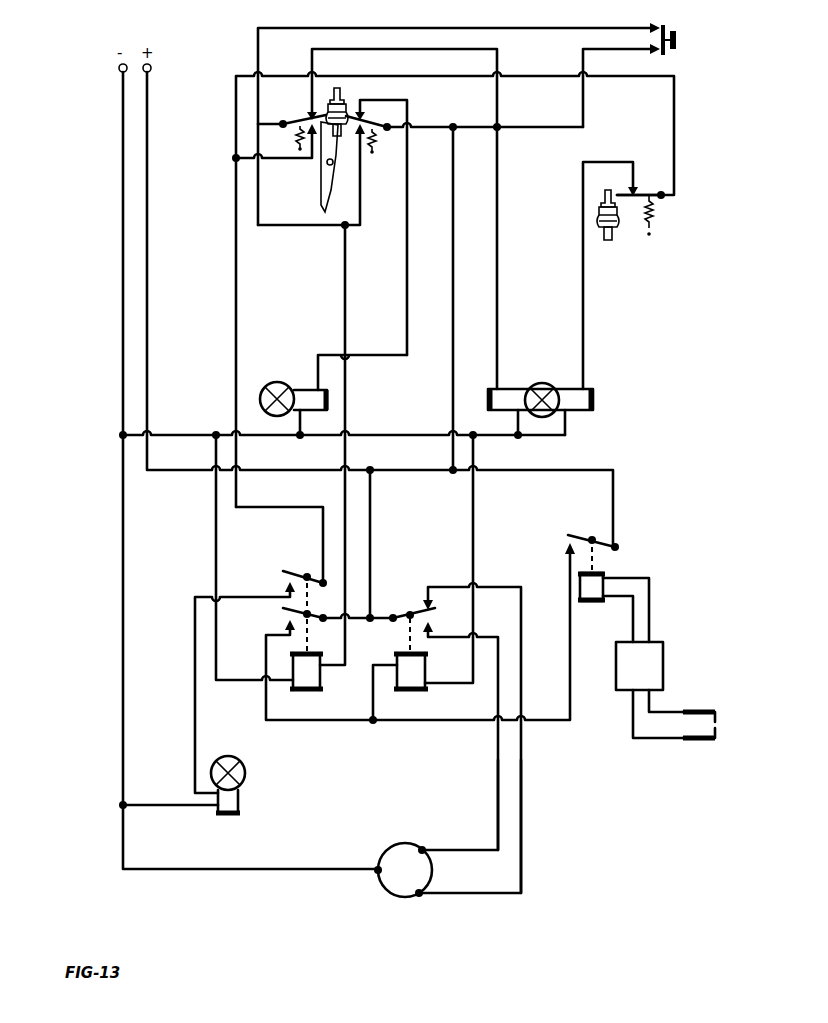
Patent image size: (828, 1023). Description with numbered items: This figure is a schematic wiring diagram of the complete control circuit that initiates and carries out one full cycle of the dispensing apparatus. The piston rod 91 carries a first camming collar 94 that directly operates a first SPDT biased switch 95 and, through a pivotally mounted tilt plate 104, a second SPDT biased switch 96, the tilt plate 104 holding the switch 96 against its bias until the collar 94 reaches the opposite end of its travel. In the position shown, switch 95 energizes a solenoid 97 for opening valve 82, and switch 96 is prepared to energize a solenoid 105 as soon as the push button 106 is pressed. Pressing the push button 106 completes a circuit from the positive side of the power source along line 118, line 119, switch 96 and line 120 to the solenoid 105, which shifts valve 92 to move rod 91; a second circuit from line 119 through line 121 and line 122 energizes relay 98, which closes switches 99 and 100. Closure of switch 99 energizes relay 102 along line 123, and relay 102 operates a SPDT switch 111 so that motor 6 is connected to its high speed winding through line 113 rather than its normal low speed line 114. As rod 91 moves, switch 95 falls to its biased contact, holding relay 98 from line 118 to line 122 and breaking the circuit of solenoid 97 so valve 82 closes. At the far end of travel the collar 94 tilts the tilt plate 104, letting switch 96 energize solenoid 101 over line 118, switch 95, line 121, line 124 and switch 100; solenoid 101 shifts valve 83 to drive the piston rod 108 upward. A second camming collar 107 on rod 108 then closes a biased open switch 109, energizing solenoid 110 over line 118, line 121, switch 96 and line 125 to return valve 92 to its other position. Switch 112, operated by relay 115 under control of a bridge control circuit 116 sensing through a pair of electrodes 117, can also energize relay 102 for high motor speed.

The motor 6 is at (400, 842).
The valve 82 is at (285, 378).
The valve 83 is at (236, 760).
The piston rod 91 is at (337, 96).
The valve 92 is at (547, 378).
The first camming collar 94 is at (346, 114).
The first SPDT biased switch 95 is at (385, 130).
The second SPDT biased switch 96 is at (296, 116).
The solenoid 97 is at (316, 412).
The relay 98 is at (306, 690).
The switch 99 is at (276, 617).
The switch 100 is at (278, 586).
The solenoid 101 is at (240, 814).
The relay 102 is at (428, 690).
The tilt plate 104 is at (321, 192).
The solenoid 105 is at (490, 387).
The push button 106 is at (630, 30).
The second camming collar 107 is at (620, 227).
The piston rod 108 is at (622, 188).
The biased open switch 109 is at (642, 191).
The solenoid 110 is at (593, 397).
The SPDT switch 111 is at (412, 600).
The switch 112 is at (594, 532).
The line 113 is at (496, 826).
The line 114 is at (523, 840).
The relay 115 is at (602, 578).
The bridge control circuit 116 is at (668, 656).
The electrodes 117 is at (722, 726).
The line 118 is at (453, 264).
The line 119 is at (510, 30).
The line 120 is at (501, 170).
The line 121 is at (260, 225).
The line 122 is at (345, 312).
The line 123 is at (372, 526).
The line 124 is at (235, 314).
The line 125 is at (236, 104).